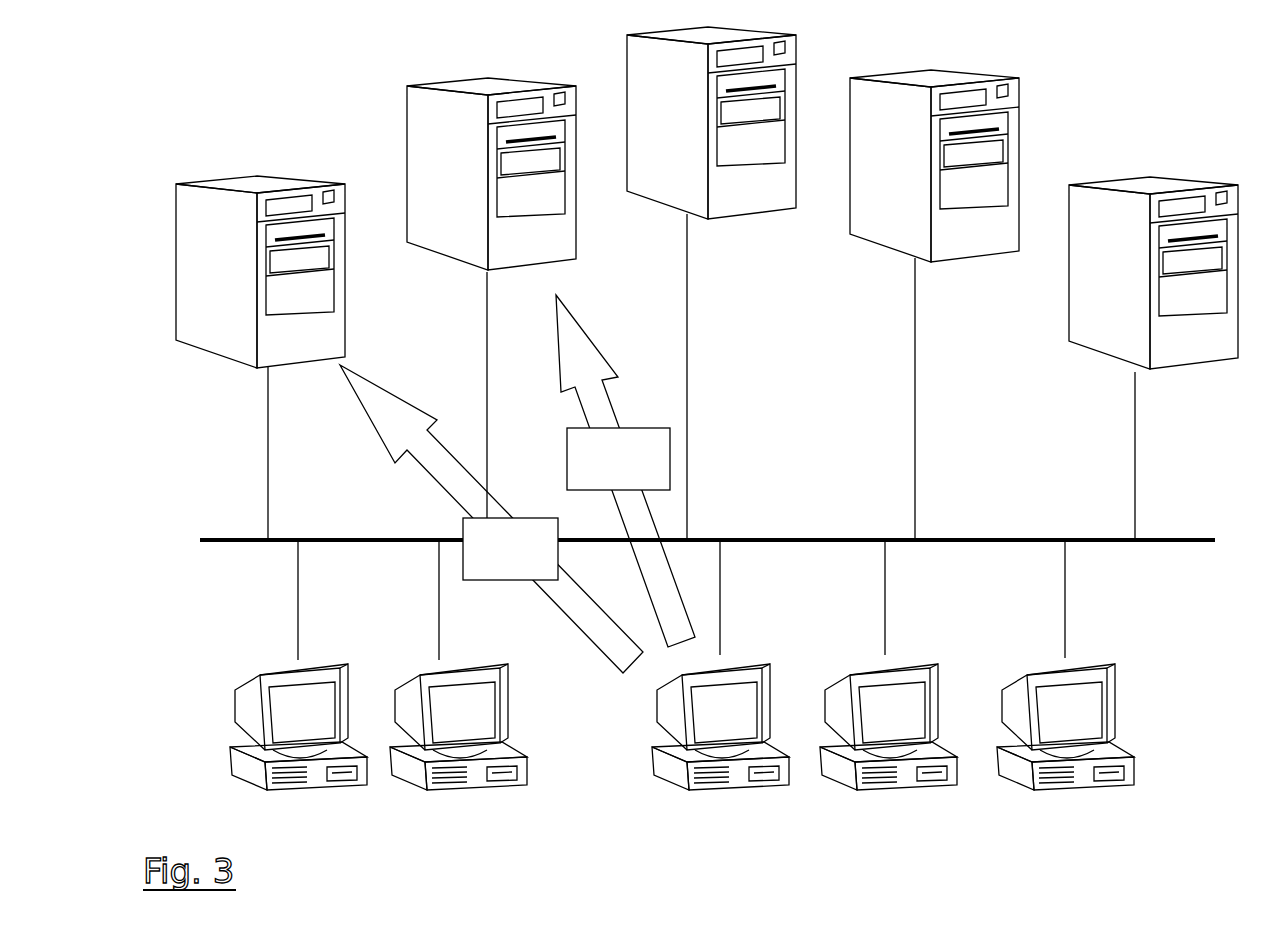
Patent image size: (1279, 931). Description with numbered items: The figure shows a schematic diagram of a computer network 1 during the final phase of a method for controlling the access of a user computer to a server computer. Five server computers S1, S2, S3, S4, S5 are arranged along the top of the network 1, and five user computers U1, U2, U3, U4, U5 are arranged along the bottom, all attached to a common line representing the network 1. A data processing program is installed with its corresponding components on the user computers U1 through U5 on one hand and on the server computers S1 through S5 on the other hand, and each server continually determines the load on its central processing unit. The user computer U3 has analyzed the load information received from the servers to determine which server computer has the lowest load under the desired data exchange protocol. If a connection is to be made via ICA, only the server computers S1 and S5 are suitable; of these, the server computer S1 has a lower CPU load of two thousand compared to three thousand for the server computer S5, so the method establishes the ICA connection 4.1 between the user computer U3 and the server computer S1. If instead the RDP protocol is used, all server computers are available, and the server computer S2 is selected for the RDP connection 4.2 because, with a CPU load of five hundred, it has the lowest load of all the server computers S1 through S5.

The computer network 1 is at (708, 515).
The connection via ICA 4.1 is at (491, 519).
The connection via RDP 4.2 is at (625, 471).
The server computer S1 is at (260, 358).
The server computer S2 is at (491, 309).
The server computer S3 is at (711, 283).
The server computer S4 is at (934, 305).
The server computer S5 is at (1153, 358).
The user computer U1 is at (298, 696).
The user computer U2 is at (458, 696).
The user computer U3 is at (720, 696).
The user computer U4 is at (888, 696).
The user computer U5 is at (1065, 696).